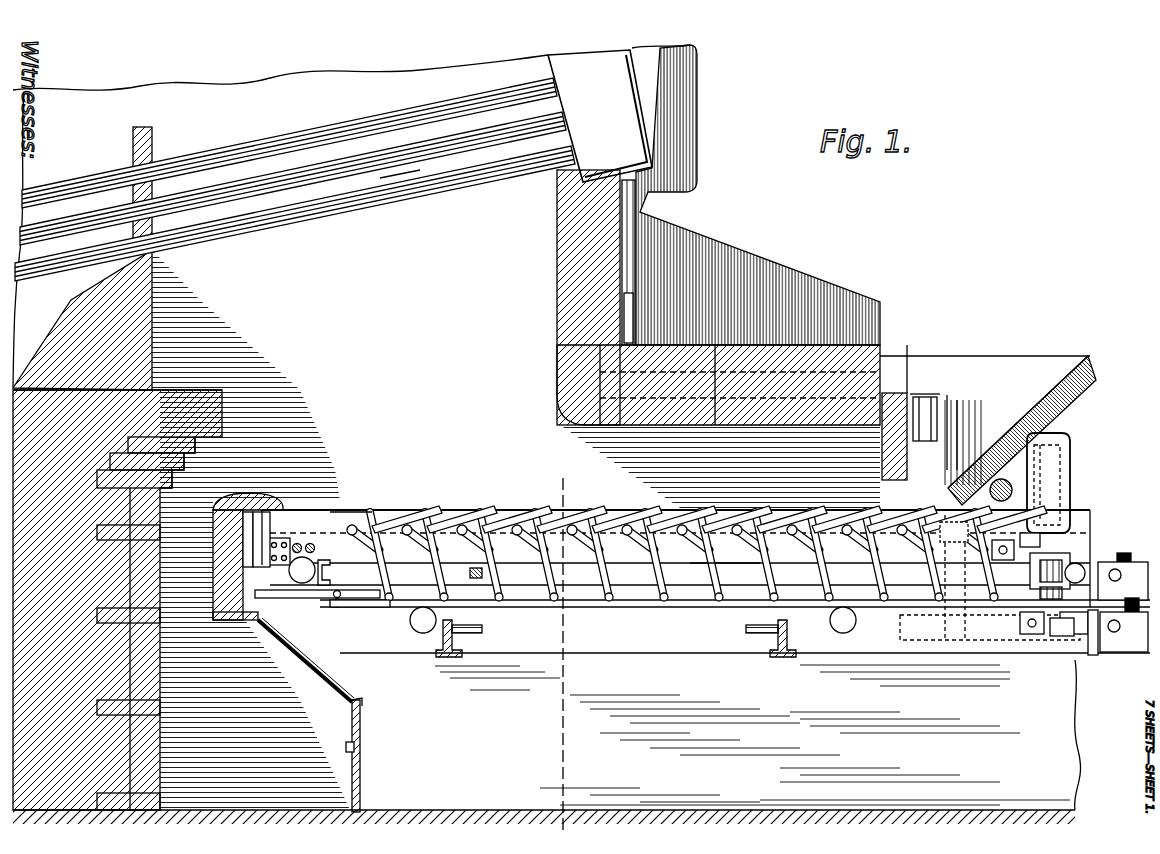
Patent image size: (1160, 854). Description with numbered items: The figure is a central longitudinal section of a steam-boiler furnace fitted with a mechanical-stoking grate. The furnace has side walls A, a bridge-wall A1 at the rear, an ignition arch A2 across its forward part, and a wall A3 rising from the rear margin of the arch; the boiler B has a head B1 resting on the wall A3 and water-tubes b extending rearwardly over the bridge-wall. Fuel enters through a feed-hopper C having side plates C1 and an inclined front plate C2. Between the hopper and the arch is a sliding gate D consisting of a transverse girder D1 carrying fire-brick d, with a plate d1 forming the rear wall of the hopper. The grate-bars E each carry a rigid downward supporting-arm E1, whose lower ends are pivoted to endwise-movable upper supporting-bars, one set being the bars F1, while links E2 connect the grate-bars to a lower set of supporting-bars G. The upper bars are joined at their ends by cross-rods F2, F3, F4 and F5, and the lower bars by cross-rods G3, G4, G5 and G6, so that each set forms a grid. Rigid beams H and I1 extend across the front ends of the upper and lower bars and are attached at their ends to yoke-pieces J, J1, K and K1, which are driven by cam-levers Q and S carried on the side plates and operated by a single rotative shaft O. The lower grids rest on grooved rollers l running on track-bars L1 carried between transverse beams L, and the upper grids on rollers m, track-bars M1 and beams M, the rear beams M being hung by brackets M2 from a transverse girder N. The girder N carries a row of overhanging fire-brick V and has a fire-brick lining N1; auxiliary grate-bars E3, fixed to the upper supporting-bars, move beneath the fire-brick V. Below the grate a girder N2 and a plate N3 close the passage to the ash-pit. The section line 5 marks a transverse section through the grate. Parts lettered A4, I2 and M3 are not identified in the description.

The side walls A is at (213, 530).
The bridge-wall A1 is at (222, 392).
The ignition or combustion arch A2 is at (690, 418).
The wall A3 is at (557, 270).
The filling A4 is at (251, 530).
The steam-boiler B is at (295, 179).
The boiler head B1 is at (600, 116).
The water-tubes b is at (410, 155).
The feed-hopper C is at (1018, 430).
The side plates C1 is at (1022, 364).
The front plate C2 is at (1070, 398).
The sliding gate D is at (886, 440).
The transverse girder D1 is at (928, 395).
The fire-brick d is at (888, 397).
The plate d1 is at (952, 432).
The grate-bars E is at (455, 512).
The supporting-arm E1 is at (526, 528).
The links E2 is at (775, 577).
The auxiliary grate-bars E3 is at (294, 528).
The supporting-bars F1 is at (736, 556).
The cross-rod F2 is at (1126, 536).
The cross-rod F3 is at (312, 546).
The cross-rod F4 is at (1030, 540).
The cross-rod F5 is at (378, 514).
The supporting-bars G is at (687, 603).
The front cross-rod G3 is at (1123, 640).
The rear cross-rod G4 is at (338, 610).
The front cross-rod G5 is at (1046, 586).
The rear cross-rod G6 is at (332, 606).
The beam H is at (1131, 598).
The beam I1 is at (1044, 637).
The block I2 is at (970, 538).
The yoke-piece J is at (1122, 565).
The yoke-piece J1 is at (1016, 550).
The yoke-piece K is at (1124, 638).
The yoke-piece K1 is at (1009, 634).
The transverse beams L is at (452, 637).
The track-bars L1 is at (425, 640).
The bearing-rollers l is at (829, 620).
The transverse beams M is at (331, 576).
The track-bars M1 is at (1068, 605).
The brackets M2 is at (258, 622).
The base M3 is at (185, 602).
The rollers m is at (687, 562).
The girder N is at (213, 530).
The lining N1 is at (362, 770).
The girder N2 is at (362, 724).
The plate N3 is at (310, 662).
The shaft O is at (1012, 490).
The cam-levers Q is at (1050, 452).
The cam-levers S is at (1064, 474).
The fire-brick V is at (268, 510).
The section line 5 is at (548, 653).